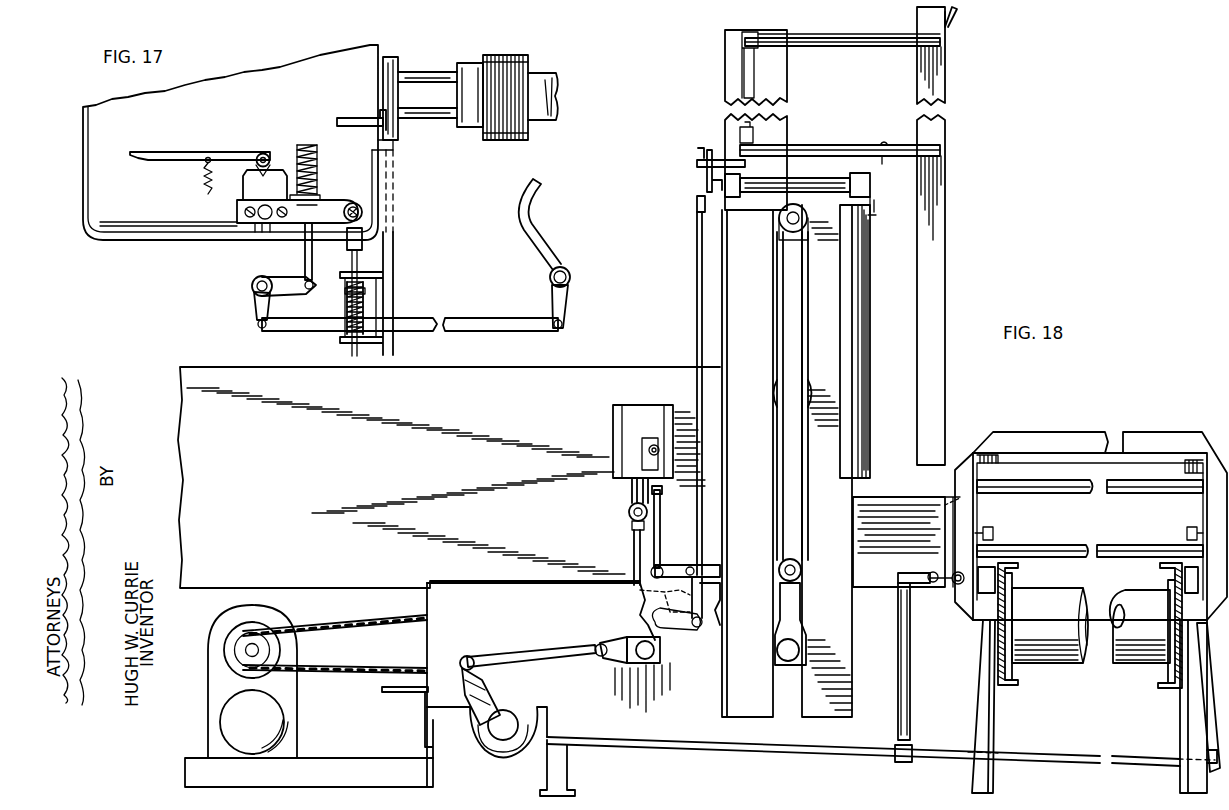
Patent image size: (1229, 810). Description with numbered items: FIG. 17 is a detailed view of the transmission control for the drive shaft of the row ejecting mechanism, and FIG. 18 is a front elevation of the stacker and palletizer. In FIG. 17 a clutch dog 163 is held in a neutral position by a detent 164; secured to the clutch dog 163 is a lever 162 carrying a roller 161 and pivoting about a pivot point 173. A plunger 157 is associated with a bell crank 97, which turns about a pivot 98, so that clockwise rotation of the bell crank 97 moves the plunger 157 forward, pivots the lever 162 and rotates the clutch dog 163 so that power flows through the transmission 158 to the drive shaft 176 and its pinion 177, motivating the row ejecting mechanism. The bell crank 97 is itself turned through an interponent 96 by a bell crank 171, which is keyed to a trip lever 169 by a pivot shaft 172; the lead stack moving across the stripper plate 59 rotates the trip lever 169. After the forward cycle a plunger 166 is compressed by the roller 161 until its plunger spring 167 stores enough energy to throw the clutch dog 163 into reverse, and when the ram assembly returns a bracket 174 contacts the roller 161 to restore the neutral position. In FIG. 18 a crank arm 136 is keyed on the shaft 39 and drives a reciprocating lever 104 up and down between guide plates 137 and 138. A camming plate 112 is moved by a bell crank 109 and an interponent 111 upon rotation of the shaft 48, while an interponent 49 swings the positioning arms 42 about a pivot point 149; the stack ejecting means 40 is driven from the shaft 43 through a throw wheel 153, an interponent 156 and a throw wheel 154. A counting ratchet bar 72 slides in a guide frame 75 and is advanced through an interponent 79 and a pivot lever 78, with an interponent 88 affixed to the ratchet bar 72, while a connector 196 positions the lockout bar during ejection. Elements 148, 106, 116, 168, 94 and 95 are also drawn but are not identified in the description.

In FIG. 17, the transmission 158 is at (333, 45).
In FIG. 17, the pinion 177 is at (528, 57).
In FIG. 17, the drive shaft 176 is at (560, 100).
In FIG. 17, the bracket 174 is at (352, 118).
In FIG. 17, the detent 164 is at (212, 152).
In FIG. 17, the clutch dog 163 is at (283, 150).
In FIG. 17, the lever 162 is at (330, 200).
In FIG. 17, the roller 161 is at (365, 208).
In FIG. 17, the pivot point 173 is at (262, 222).
In FIG. 17, the plunger 157 is at (305, 256).
In FIG. 17, the pivot 98 is at (252, 284).
In FIG. 18, the pivot 98 is at (910, 677).
In FIG. 17, the bell crank 97 is at (255, 300).
In FIG. 18, the bell crank 97 is at (905, 762).
In FIG. 17, the plunger 166 is at (362, 243).
In FIG. 18, the plunger 166 is at (925, 573).
In FIG. 17, the plunger spring 167 is at (345, 302).
In FIG. 17, the bracket 168 is at (386, 300).
In FIG. 17, the interponent 96 is at (513, 318).
In FIG. 18, the interponent 96 is at (1065, 763).
In FIG. 17, the trip lever 169 is at (540, 225).
In FIG. 17, the pivot shaft 172 is at (569, 270).
In FIG. 18, the pivot shaft 172 is at (1210, 720).
In FIG. 17, the bell crank 171 is at (568, 300).
In FIG. 18, the stack ejecting means 40 is at (725, 72).
In FIG. 18, the pivot point 149 is at (740, 88).
In FIG. 18, the positioning arms 42 is at (880, 38).
In FIG. 18, the bell crank 109 is at (866, 178).
In FIG. 18, the interponent 111 is at (876, 200).
In FIG. 18, the interponent 49 is at (697, 166).
In FIG. 18, the shaft 48 is at (710, 194).
In FIG. 18, the rod 148 is at (697, 293).
In FIG. 18, the guide plate 138 is at (722, 345).
In FIG. 18, the reciprocating lever 104 is at (780, 316).
In FIG. 18, the pulley 106 is at (775, 216).
In FIG. 18, the camming plate 112 is at (870, 293).
In FIG. 18, the guide plate 137 is at (845, 355).
In FIG. 18, the strip 116 is at (860, 424).
In FIG. 18, the crank arm 136 is at (783, 612).
In FIG. 18, the shaft 39 is at (780, 660).
In FIG. 18, the guide frame 75 is at (613, 410).
In FIG. 18, the window 94 is at (650, 448).
In FIG. 18, the ratchet bar 72 is at (632, 496).
In FIG. 18, the interponent 88 is at (634, 552).
In FIG. 18, the interponent 79 is at (662, 530).
In FIG. 18, the pivot lever 78 is at (706, 568).
In FIG. 18, the connector 196 is at (650, 612).
In FIG. 18, the shaft 43 is at (640, 640).
In FIG. 18, the throw wheel 153 is at (612, 658).
In FIG. 18, the interponent 156 is at (535, 650).
In FIG. 18, the throw wheel 154 is at (505, 697).
In FIG. 18, the chain 95 is at (352, 665).
In FIG. 18, the stripper plate 59 is at (965, 497).